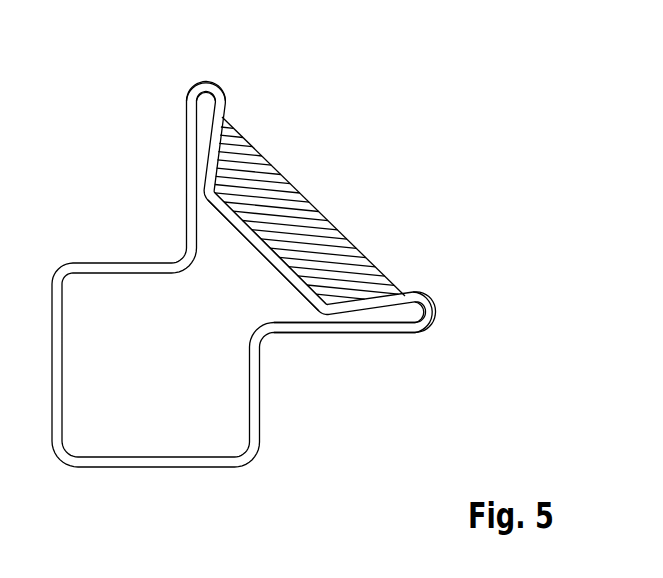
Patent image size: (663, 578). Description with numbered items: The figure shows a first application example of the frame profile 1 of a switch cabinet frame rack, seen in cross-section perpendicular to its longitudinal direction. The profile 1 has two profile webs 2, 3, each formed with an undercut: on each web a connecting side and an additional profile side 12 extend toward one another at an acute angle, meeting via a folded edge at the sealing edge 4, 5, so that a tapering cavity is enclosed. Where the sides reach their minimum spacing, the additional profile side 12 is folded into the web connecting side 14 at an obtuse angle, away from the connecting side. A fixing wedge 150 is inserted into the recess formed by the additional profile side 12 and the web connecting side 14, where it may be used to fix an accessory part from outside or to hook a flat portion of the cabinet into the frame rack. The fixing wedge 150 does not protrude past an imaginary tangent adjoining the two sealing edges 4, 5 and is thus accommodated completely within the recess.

The frame profile 1 is at (373, 116).
The profile web 2 is at (162, 102).
The profile web 3 is at (428, 352).
The sealing edge 4 is at (204, 81).
The sealing edge 5 is at (436, 308).
The additional profile side 12 is at (223, 116).
The web connecting side 14 is at (257, 249).
The fixing wedge 150 is at (312, 205).